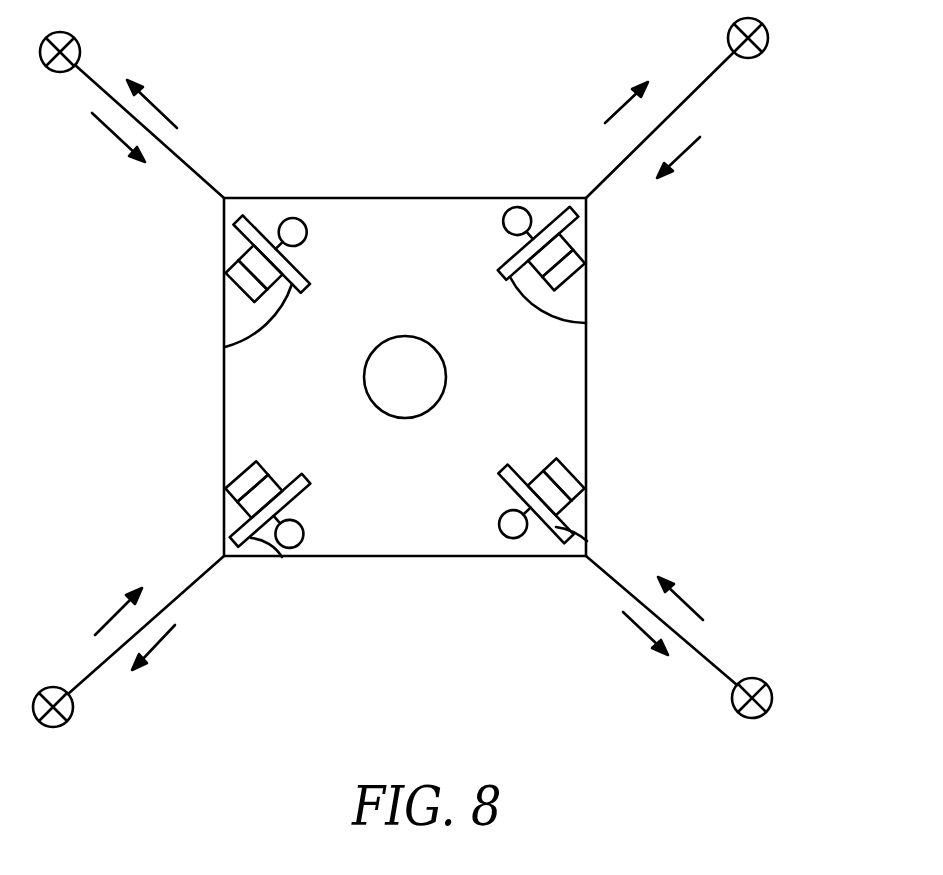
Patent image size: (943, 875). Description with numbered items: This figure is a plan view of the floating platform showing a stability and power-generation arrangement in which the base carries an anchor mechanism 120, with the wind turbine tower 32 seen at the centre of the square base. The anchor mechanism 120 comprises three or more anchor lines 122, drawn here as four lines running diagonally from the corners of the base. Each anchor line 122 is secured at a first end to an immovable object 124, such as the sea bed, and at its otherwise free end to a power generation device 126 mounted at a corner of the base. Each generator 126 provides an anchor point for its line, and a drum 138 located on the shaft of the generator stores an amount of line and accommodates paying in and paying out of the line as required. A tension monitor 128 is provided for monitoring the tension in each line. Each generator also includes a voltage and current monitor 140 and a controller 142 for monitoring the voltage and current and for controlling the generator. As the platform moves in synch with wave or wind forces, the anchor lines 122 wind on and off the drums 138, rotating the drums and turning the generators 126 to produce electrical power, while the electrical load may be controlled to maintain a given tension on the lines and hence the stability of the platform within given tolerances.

The anchor mechanism 120 is at (381, 168).
The tower 32 is at (447, 380).
The anchor lines 122 is at (184, 169).
The immovable object 124 is at (74, 51).
The power generation device 126 is at (233, 272).
The tension monitor 128 is at (291, 229).
The drum 138 is at (226, 346).
The voltage and current monitor 140 is at (244, 288).
The controller 142 is at (602, 284).